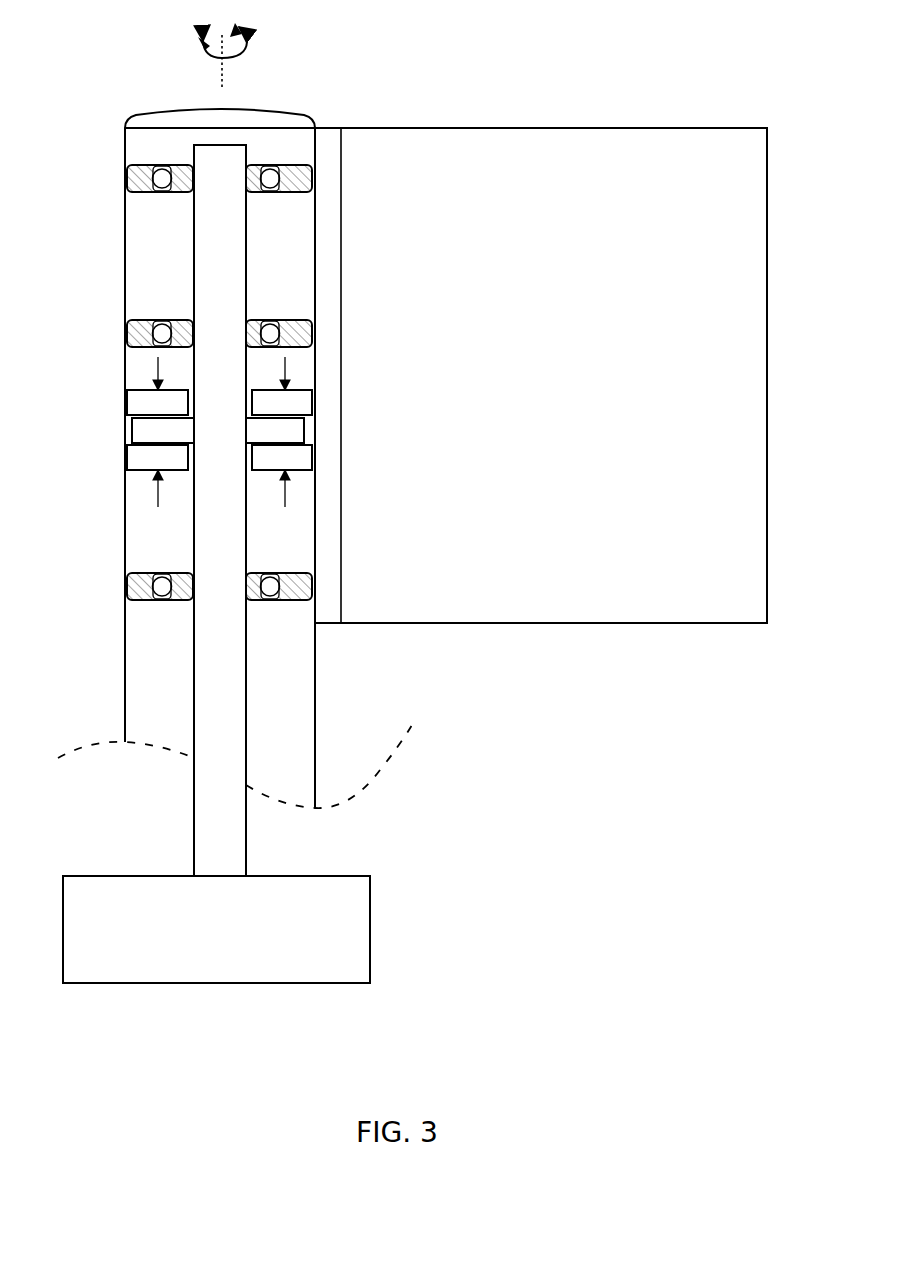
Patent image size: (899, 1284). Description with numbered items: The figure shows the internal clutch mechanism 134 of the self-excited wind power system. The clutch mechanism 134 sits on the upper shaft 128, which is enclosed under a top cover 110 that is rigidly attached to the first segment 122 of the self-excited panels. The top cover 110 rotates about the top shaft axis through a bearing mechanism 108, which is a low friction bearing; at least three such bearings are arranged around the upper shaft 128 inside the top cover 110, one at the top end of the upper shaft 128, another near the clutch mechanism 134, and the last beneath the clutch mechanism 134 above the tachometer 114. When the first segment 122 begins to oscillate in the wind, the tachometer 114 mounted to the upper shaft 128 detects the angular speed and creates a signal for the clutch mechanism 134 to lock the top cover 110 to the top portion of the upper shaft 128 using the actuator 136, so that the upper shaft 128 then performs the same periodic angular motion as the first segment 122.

The top cover 110 is at (125, 138).
The upper shaft 128 is at (210, 283).
The first segment 122 is at (550, 383).
The tachometer 114 is at (234, 936).
The bearing mechanism 108 is at (130, 580).
The actuator 136 is at (133, 403).
The clutch mechanism 134 is at (133, 437).